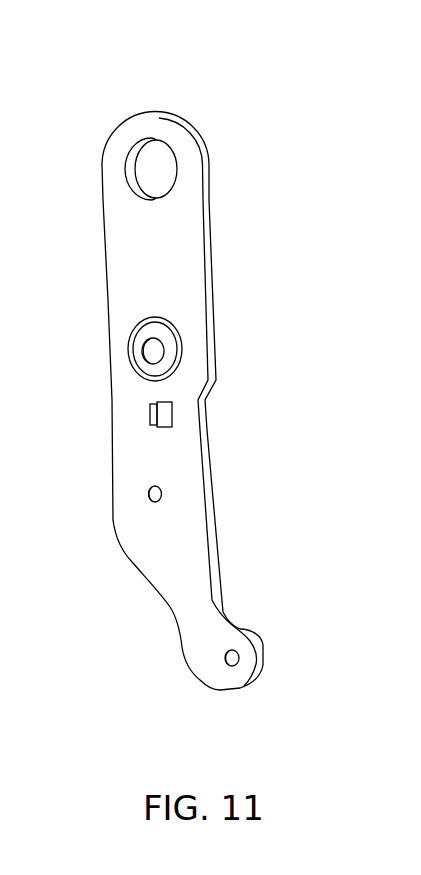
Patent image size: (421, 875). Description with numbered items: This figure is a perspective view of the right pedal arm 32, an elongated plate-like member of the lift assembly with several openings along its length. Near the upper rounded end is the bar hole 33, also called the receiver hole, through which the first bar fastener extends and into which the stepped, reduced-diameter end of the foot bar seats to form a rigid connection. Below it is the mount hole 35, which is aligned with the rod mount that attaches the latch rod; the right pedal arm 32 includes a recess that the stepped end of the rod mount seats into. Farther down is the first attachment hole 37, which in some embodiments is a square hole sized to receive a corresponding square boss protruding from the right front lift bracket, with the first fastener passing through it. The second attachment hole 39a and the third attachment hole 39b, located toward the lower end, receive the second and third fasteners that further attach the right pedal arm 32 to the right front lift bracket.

The right pedal arm 32 is at (178, 80).
The bar hole 33 is at (152, 168).
The mount hole 35 is at (137, 350).
The first attachment hole 37 is at (150, 415).
The second attachment hole 39a is at (147, 495).
The third attachment hole 39b is at (224, 660).